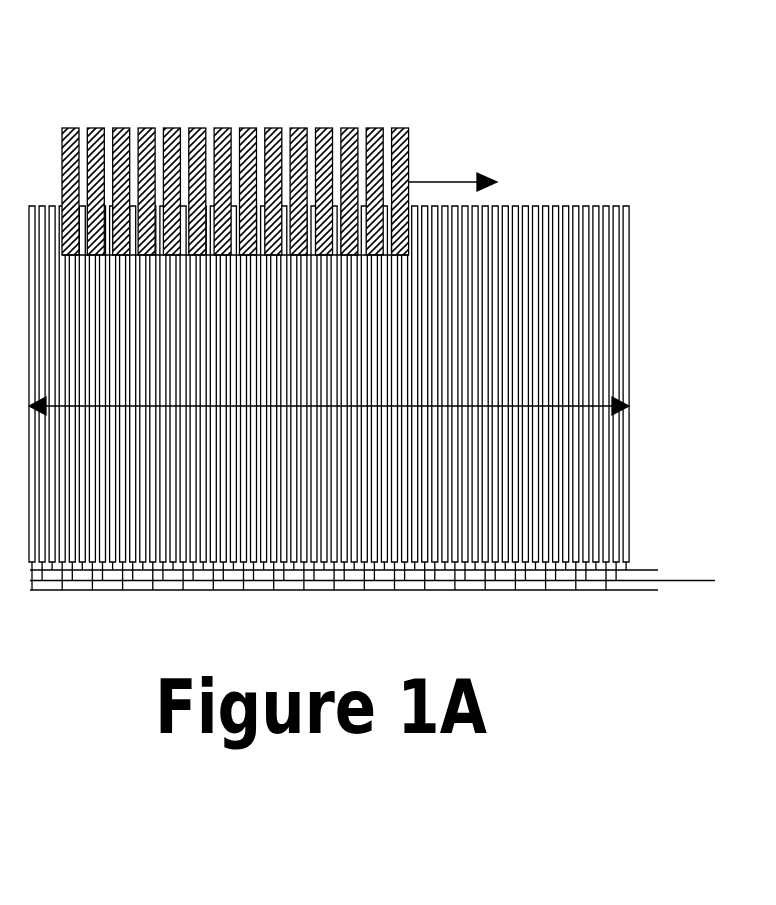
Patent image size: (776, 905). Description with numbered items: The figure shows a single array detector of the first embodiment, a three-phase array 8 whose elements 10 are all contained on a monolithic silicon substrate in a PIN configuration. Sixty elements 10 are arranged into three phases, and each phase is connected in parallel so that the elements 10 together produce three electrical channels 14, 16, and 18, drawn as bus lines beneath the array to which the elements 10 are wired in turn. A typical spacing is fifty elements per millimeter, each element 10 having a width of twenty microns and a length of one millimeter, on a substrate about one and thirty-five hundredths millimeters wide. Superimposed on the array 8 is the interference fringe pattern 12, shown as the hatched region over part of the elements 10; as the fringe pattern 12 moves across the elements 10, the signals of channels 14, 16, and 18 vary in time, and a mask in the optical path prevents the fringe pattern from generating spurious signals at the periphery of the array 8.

The array 8 is at (329, 405).
The elements 10 is at (597, 208).
The interference fringe pattern 12 is at (227, 128).
The channel 14 is at (658, 570).
The channel 16 is at (393, 579).
The channel 18 is at (658, 590).